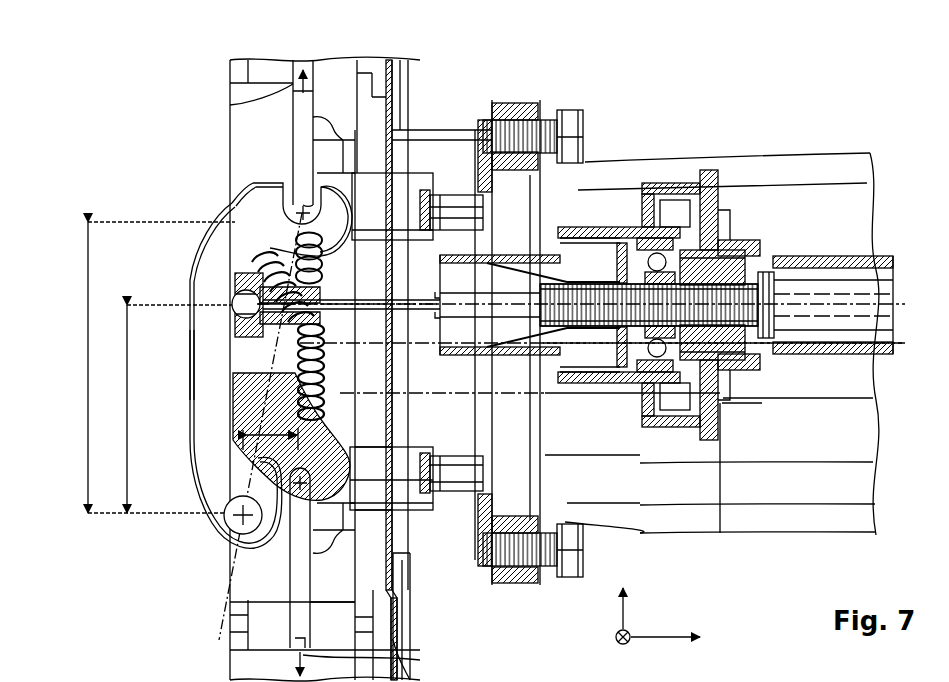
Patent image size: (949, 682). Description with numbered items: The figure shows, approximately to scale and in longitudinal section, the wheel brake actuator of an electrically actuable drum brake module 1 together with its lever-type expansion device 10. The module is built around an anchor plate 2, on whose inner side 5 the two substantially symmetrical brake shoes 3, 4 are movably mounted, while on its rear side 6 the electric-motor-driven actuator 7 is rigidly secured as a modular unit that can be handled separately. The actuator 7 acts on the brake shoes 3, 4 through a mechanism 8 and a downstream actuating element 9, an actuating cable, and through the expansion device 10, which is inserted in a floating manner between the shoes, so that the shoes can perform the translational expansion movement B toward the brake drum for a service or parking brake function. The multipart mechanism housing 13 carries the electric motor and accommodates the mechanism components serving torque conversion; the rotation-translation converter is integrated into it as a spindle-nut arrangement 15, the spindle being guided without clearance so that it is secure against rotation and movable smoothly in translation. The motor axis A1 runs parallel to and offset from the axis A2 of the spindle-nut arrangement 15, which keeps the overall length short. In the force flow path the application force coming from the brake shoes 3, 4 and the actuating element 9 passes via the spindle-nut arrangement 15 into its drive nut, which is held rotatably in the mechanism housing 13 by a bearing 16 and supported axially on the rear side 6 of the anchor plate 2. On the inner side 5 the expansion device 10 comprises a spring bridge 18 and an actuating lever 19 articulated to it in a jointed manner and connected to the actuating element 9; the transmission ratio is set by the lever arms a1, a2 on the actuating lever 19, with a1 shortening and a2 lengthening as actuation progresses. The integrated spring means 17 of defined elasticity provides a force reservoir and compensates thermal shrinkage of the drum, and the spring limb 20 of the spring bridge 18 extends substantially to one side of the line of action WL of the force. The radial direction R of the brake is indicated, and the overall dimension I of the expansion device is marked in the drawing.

The drum brake module 1 is at (652, 140).
The anchor plate 2 is at (387, 98).
The brake shoe 3 is at (247, 665).
The brake shoe 4 is at (238, 76).
The inner side 5 is at (355, 583).
The rear side 6 is at (413, 103).
The actuator 7 is at (827, 247).
The mechanism 8 is at (677, 193).
The actuating element 9 is at (420, 200).
The expansion device 10 is at (176, 378).
The mechanism housing 13 is at (720, 197).
The spindle-nut arrangement 15 is at (567, 273).
The bearing 16 is at (720, 250).
The spring means 17 is at (180, 355).
The spring bridge 18 is at (232, 203).
The actuating lever 19 is at (253, 397).
The spring limb 20 is at (203, 350).
The axis A1 is at (923, 342).
The axis A2 is at (923, 303).
The expansion movement B is at (230, 105).
The dimension I is at (86, 357).
The lever arm a1 is at (127, 403).
The lever arm a2 is at (260, 432).
The line of action WL is at (222, 623).
The radial direction R is at (665, 616).